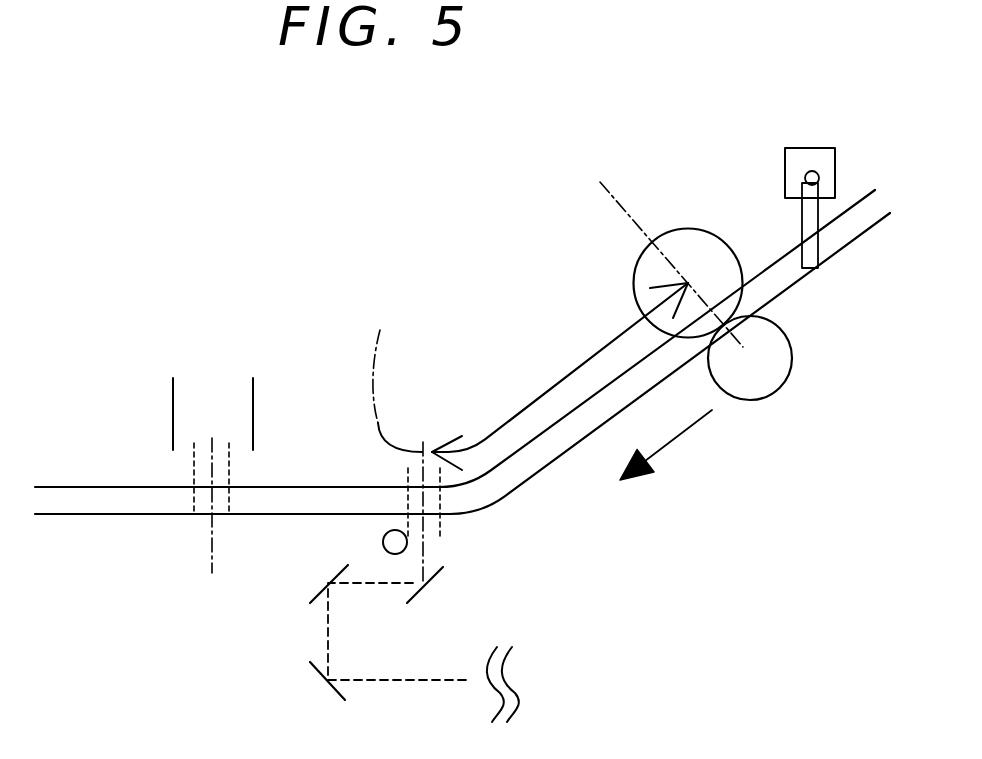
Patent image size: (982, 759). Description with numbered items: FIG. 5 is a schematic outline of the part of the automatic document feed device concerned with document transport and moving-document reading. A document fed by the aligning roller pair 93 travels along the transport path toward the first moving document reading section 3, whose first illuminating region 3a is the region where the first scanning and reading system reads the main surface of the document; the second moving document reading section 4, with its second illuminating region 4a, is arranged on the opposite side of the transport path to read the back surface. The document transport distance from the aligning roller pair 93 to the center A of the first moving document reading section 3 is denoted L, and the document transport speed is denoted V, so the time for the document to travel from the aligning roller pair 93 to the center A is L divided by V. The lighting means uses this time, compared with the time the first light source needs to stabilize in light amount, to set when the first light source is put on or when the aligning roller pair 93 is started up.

The first moving document reading section 3 is at (462, 528).
The first illuminating region 3a is at (422, 428).
The second moving document reading section 4 is at (195, 523).
The second illuminating region 4a is at (192, 577).
The aligning roller pair 93 is at (688, 229).
The center of the first moving document reading section A is at (396, 373).
The document transport distance L is at (455, 338).
The document transport speed V is at (666, 449).